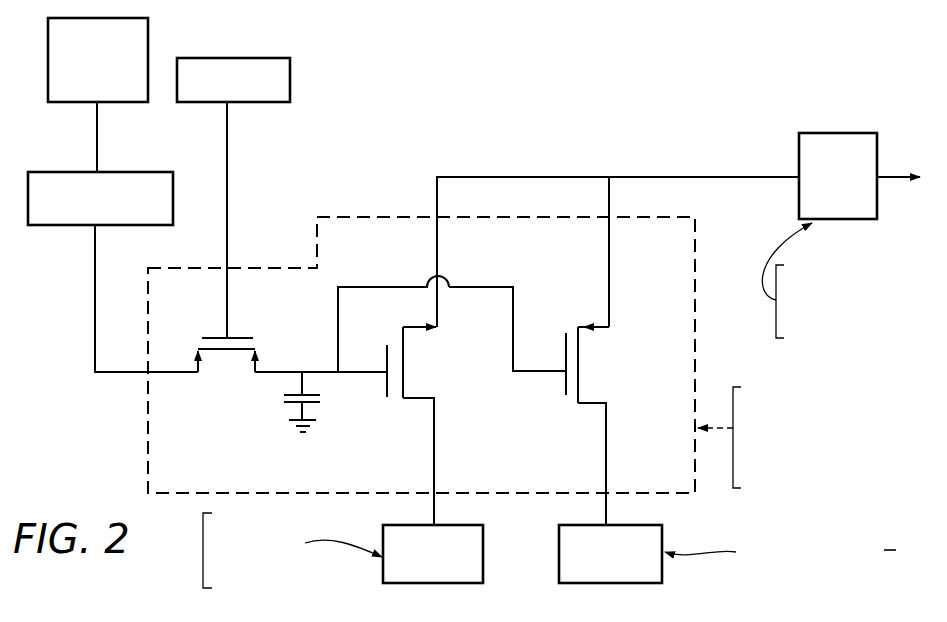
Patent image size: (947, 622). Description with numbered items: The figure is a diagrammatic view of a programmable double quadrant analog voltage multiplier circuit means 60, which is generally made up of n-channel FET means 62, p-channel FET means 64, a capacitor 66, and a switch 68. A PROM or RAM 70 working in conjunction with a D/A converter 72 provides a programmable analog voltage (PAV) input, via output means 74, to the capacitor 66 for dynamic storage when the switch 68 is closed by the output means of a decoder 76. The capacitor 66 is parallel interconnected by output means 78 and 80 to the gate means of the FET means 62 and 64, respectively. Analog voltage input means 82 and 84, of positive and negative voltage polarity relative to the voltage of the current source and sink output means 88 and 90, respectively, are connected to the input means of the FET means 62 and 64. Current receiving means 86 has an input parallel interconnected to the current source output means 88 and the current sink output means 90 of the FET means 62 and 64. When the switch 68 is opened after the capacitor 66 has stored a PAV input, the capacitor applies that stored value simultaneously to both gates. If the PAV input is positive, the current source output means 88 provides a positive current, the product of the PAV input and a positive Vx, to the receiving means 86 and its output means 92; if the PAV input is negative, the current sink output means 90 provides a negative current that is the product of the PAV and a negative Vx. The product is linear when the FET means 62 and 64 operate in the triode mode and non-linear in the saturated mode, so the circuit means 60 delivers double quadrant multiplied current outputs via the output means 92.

The programmable double quadrant analog voltage multiplier circuit means 60 is at (145, 418).
The n-channel FET means 62 is at (412, 402).
The p-channel FET means 64 is at (568, 405).
The capacitor 66 is at (300, 380).
The switch 68 is at (259, 339).
The PROM or RAM 70 is at (148, 43).
The D/A converter 72 is at (138, 172).
The output means 74 is at (95, 320).
The decoder 76 is at (290, 76).
The output means 78 is at (358, 370).
The output means 80 is at (498, 287).
The analog voltage input means 82 is at (445, 560).
The analog voltage input means 84 is at (619, 560).
The current receiving means 86 is at (850, 188).
The current source output means 88 is at (437, 247).
The current sink output means 90 is at (609, 262).
The output means 92 is at (893, 172).